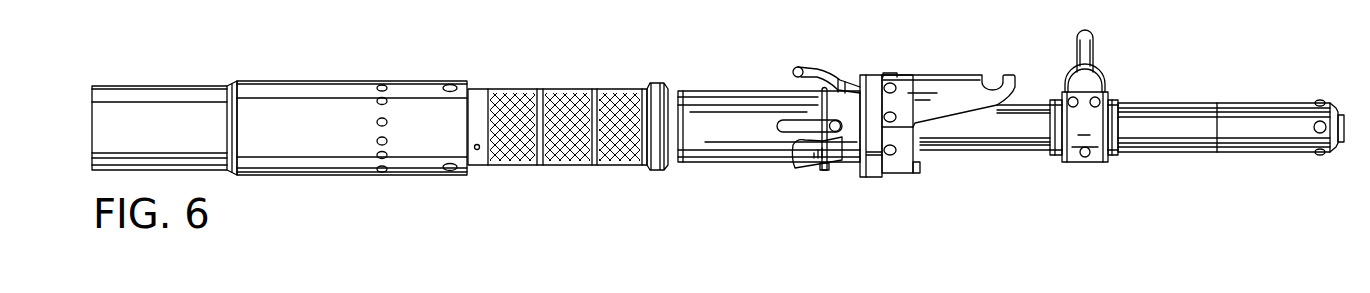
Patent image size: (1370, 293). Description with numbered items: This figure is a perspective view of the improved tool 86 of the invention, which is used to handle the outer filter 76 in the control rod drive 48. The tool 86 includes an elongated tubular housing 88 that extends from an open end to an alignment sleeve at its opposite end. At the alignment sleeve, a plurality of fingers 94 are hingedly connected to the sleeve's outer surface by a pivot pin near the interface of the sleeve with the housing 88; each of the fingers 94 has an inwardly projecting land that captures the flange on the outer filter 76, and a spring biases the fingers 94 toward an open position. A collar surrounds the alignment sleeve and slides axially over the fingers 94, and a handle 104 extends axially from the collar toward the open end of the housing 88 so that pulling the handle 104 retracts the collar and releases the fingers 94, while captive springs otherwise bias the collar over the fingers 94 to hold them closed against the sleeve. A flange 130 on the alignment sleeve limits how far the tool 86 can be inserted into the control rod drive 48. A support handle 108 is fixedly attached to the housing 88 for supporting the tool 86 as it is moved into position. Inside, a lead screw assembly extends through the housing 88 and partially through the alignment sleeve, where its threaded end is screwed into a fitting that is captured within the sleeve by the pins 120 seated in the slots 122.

The control rod drive 48 is at (360, 82).
The outer filter 76 is at (567, 89).
The flange 130 is at (818, 105).
The fingers 94 is at (805, 62).
The pins 120 is at (831, 72).
The slots 122 is at (860, 122).
The handle 104 is at (963, 73).
The tool 86 is at (1153, 90).
The support handle 108 is at (1093, 55).
The tubular housing 88 is at (1270, 105).